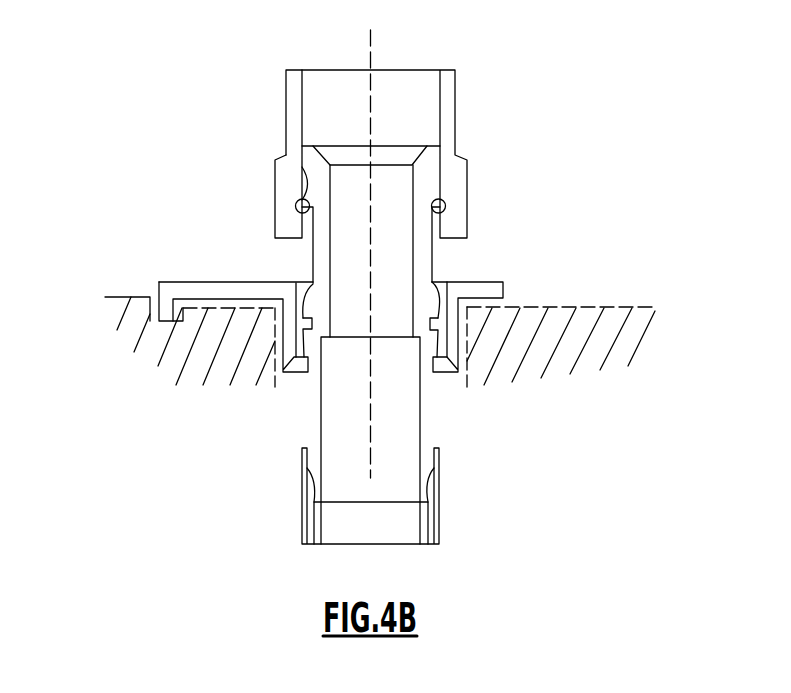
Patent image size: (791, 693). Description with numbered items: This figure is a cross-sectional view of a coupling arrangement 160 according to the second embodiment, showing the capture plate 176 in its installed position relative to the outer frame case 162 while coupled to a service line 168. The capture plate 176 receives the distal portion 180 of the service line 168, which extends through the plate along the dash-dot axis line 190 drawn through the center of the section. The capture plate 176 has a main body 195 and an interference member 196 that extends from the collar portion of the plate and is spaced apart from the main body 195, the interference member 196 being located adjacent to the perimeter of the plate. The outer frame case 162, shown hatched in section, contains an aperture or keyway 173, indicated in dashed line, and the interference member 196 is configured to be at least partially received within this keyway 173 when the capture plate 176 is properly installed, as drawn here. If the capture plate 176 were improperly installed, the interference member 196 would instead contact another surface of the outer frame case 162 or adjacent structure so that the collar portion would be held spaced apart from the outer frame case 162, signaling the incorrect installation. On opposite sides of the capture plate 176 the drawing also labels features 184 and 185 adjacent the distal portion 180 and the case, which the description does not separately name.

The coupling arrangement 160 is at (228, 82).
The central axis 190 is at (371, 62).
The capture plate 176 is at (175, 268).
The interference member 196 is at (163, 314).
The aperture or keyway 173 is at (157, 312).
The barb 184 is at (313, 299).
The distal portion 180 is at (432, 258).
The flange 185 is at (440, 285).
The outer frame case 162 is at (112, 297).
The main body 195 is at (273, 350).
The service line 168 is at (448, 458).